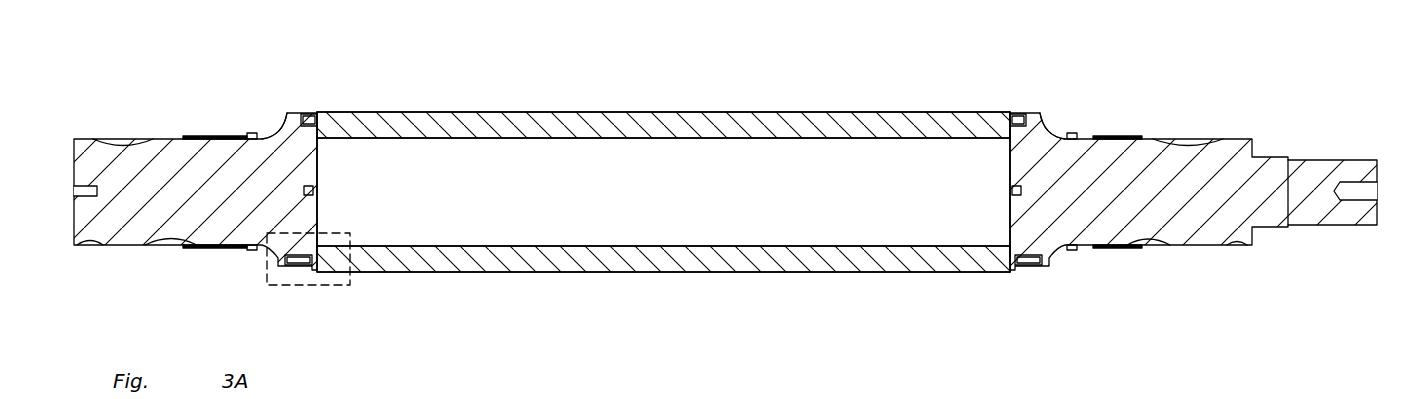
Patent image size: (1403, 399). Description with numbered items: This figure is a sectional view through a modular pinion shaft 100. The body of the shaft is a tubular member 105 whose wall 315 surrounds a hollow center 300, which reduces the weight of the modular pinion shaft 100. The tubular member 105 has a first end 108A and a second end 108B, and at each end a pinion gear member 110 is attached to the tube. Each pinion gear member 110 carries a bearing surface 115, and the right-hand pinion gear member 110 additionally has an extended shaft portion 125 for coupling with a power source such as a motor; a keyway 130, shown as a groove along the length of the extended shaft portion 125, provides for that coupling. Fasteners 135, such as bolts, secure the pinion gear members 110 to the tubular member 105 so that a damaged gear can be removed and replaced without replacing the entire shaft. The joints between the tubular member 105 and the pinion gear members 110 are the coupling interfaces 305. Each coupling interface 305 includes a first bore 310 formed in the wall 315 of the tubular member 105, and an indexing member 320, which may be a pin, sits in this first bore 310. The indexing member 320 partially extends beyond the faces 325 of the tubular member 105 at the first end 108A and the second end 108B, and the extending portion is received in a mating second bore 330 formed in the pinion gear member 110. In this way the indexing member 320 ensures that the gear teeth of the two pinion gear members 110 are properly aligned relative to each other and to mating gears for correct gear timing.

The modular pinion shaft 100 is at (995, 40).
The tubular member 105 is at (668, 112).
The first end 108A is at (360, 274).
The second end 108B is at (965, 273).
The pinion gear member 110 is at (128, 116).
The bearing surface 115 is at (208, 136).
The extended shaft portion 125 is at (92, 246).
The keyway 130 is at (1340, 160).
The fastener 135 is at (280, 116).
The hollow center 300 is at (817, 165).
The coupling interface 305 is at (338, 151).
The first bore 310 is at (320, 122).
The wall 315 is at (525, 112).
The indexing member 320 is at (303, 118).
The face 325 is at (297, 268).
The second bore 330 is at (304, 120).